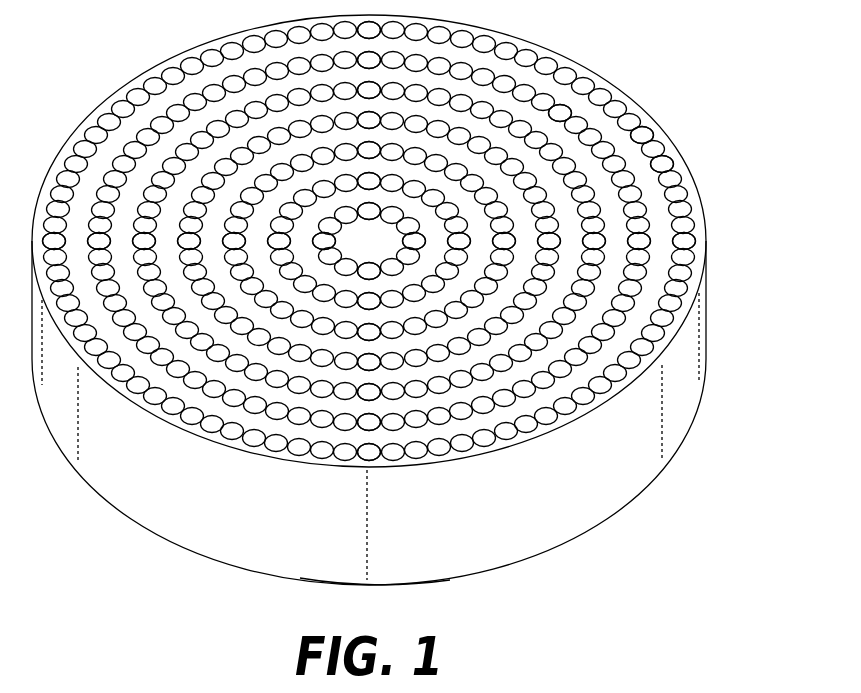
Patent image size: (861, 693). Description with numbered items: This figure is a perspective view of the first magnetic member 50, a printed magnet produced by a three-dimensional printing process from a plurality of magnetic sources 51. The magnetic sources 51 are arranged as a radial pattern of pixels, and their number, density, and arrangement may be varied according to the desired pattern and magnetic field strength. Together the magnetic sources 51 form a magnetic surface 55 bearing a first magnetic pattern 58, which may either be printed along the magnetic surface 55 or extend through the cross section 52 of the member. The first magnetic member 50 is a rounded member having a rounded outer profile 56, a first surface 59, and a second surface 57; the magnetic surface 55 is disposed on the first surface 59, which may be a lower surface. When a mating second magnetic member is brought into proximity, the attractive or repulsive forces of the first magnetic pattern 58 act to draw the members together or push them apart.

The first magnetic member 50 is at (720, 230).
The magnetic sources 51 is at (668, 164).
The cross section 52 is at (97, 440).
The magnetic surface 55 is at (623, 136).
The rounded outer profile 56 is at (683, 377).
The second surface 57 is at (533, 562).
The first magnetic pattern 58 is at (109, 67).
The first surface 59 is at (562, 99).